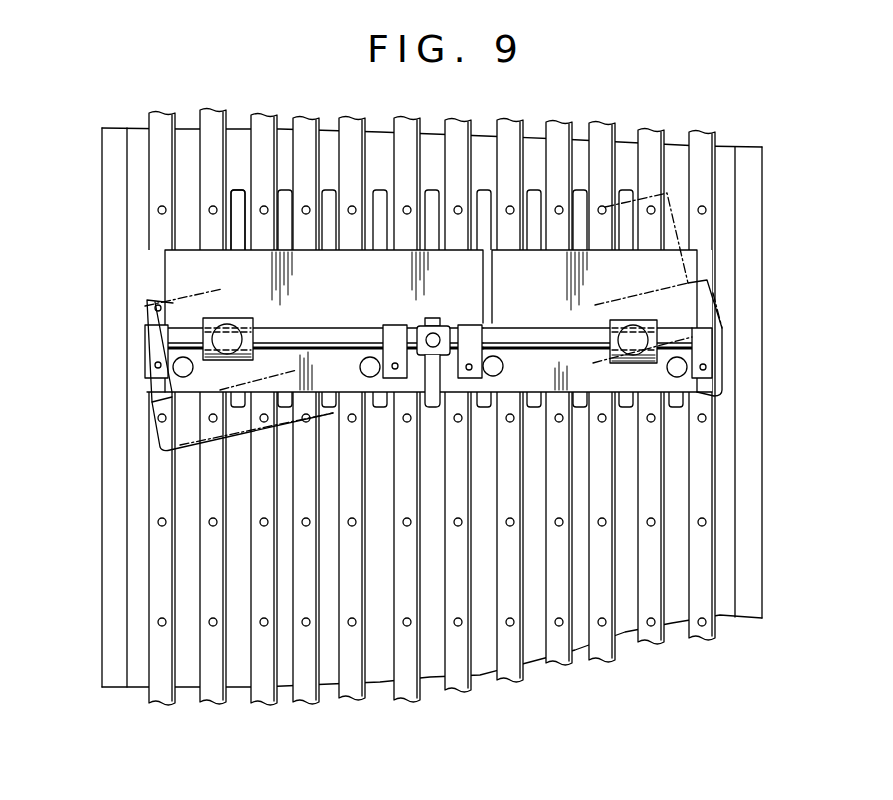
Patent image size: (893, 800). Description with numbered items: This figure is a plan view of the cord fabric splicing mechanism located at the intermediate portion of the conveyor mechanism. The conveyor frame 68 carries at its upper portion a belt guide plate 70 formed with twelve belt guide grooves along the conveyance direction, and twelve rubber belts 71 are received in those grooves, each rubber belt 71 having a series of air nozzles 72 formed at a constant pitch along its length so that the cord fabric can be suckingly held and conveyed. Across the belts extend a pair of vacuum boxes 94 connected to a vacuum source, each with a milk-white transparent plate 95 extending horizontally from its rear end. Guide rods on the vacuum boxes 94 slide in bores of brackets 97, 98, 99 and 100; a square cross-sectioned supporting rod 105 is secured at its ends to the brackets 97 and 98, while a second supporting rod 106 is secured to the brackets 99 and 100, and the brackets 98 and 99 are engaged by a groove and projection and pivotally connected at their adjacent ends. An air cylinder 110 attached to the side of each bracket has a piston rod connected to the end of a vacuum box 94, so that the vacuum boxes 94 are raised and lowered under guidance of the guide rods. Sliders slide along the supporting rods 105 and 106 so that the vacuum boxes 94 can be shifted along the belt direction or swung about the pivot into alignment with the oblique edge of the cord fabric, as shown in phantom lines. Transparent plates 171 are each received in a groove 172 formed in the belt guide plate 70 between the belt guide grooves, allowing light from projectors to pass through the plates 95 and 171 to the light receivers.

The conveyor frame 68 is at (115, 522).
The belt guide plate 70 is at (526, 657).
The rubber belt 71 is at (595, 658).
The air nozzle 72 is at (605, 624).
The vacuum box 94 is at (150, 380).
The milk-white transparent plate 95 is at (170, 265).
The bracket 97 is at (147, 350).
The bracket 98 is at (387, 373).
The bracket 99 is at (478, 376).
The bracket 100 is at (673, 367).
The supporting rod 105 is at (333, 333).
The supporting rod 106 is at (537, 335).
The air cylinder 110 is at (193, 369).
The transparent plate 171 is at (247, 197).
The groove 172 is at (236, 205).